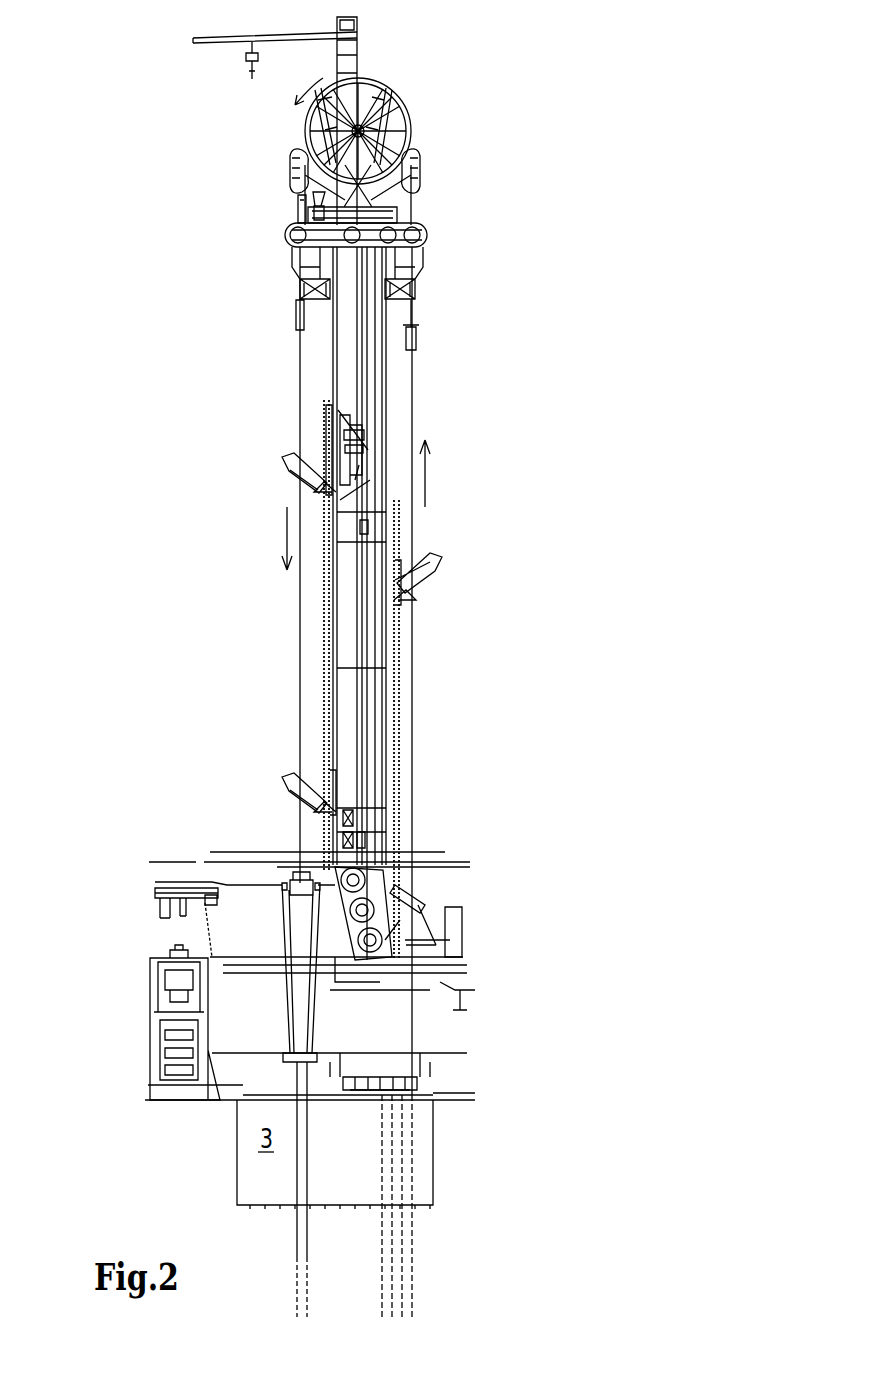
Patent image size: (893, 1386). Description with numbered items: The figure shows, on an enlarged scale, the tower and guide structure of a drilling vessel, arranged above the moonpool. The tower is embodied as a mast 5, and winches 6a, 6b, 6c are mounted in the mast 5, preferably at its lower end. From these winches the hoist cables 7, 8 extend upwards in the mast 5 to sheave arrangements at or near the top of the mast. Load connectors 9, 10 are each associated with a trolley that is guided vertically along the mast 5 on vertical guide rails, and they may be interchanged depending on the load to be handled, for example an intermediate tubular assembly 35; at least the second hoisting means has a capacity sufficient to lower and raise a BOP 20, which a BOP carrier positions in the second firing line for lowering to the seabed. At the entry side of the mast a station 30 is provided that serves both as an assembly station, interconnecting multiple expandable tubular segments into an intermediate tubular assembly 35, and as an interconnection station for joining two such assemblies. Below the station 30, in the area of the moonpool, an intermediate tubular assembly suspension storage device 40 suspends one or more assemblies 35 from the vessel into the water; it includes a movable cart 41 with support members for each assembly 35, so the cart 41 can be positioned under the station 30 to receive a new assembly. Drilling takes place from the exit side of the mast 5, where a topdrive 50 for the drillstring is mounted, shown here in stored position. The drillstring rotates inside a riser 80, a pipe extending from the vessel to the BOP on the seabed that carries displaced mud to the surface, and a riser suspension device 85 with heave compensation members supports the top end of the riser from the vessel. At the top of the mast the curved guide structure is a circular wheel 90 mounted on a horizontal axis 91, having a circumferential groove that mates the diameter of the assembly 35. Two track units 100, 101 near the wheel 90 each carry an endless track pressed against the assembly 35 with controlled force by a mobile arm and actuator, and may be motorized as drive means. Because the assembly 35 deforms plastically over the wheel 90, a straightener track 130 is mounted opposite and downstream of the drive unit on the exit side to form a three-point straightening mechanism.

The mast 5 is at (393, 388).
The hoist cable 7 is at (382, 410).
The hoist cable 8 is at (362, 365).
The load connector / trolley 9 is at (413, 282).
The load connector / trolley 10 is at (297, 288).
The BOP 20 is at (157, 1013).
The station 30 is at (460, 912).
The intermediate tubular assembly 35 is at (410, 672).
The intermediate tubular assembly suspension storage device 40 is at (438, 1053).
The movable cart 41 is at (413, 1083).
The topdrive 50 is at (353, 450).
The winch 6a is at (358, 876).
The winch 6b is at (367, 906).
The winch 6c is at (375, 936).
The riser 80 is at (310, 1170).
The riser suspension device 85 is at (236, 938).
The circular wheel 90 is at (410, 112).
The horizontal axis 91 is at (310, 134).
The track unit 100 is at (422, 173).
The track unit 101 is at (292, 175).
The straightener track 130 is at (303, 210).